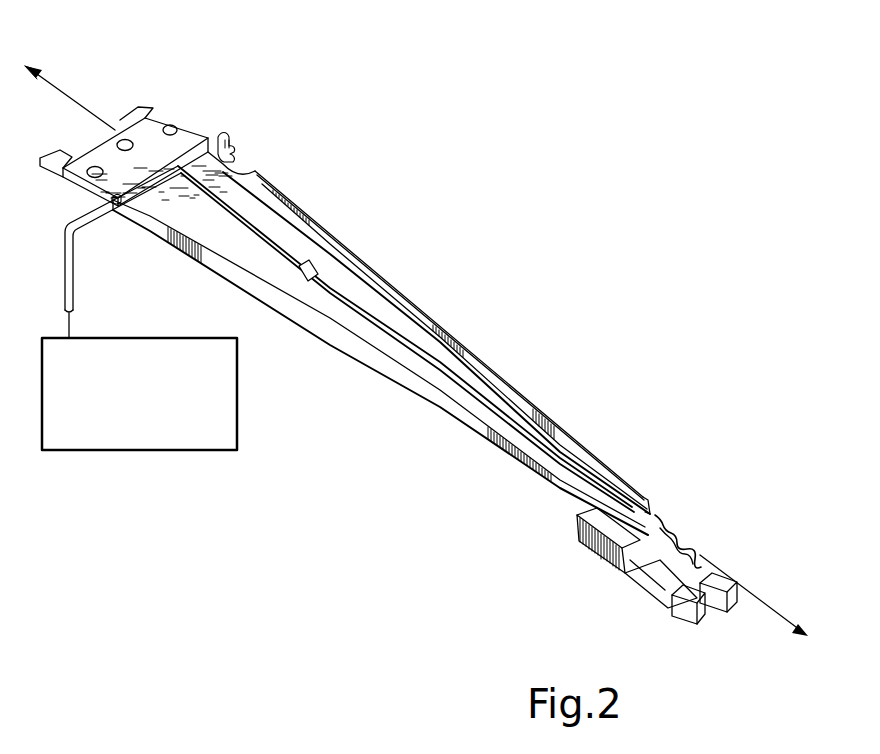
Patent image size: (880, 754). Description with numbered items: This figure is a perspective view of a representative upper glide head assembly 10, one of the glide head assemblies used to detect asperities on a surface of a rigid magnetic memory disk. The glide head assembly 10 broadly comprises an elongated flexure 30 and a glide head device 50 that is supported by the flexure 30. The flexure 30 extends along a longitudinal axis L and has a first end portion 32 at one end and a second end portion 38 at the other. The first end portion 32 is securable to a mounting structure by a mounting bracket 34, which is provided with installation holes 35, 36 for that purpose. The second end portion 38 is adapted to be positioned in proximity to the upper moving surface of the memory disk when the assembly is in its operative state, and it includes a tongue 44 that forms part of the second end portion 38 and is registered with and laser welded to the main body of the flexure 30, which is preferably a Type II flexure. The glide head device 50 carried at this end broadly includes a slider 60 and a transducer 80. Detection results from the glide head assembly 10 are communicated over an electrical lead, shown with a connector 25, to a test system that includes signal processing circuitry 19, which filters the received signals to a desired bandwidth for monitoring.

The upper glide head assembly 10 is at (473, 397).
The signal processing circuitry 19 is at (92, 453).
The cable connector 25 is at (118, 206).
The flexure 30 is at (368, 300).
The first end portion 32 is at (270, 155).
The mounting bracket 34 is at (100, 152).
The installation hole 35 is at (84, 172).
The installation hole 36 is at (171, 126).
The second end portion 38 is at (548, 500).
The tongue 44 is at (632, 574).
The glide head device 50 is at (703, 548).
The slider 60 is at (577, 549).
The transducer 80 is at (668, 600).